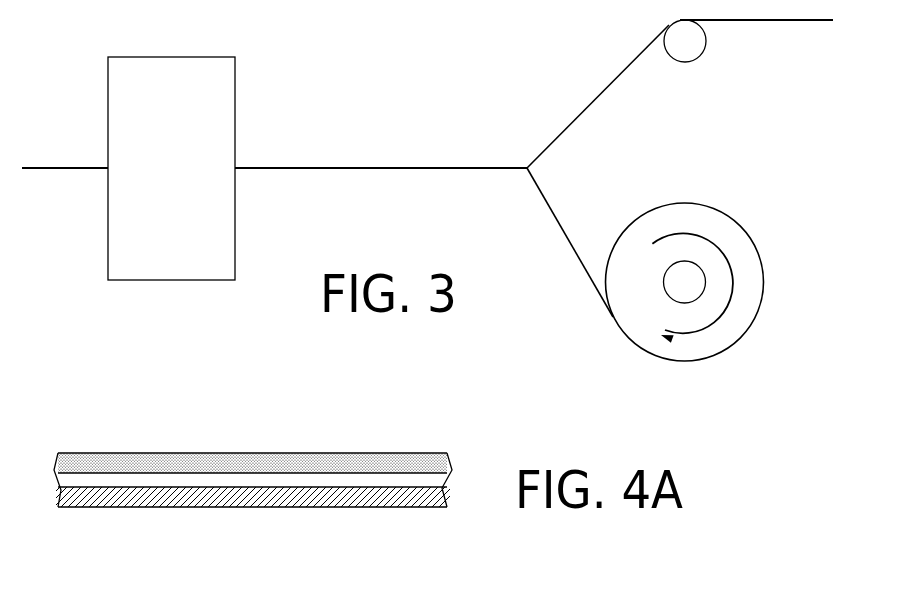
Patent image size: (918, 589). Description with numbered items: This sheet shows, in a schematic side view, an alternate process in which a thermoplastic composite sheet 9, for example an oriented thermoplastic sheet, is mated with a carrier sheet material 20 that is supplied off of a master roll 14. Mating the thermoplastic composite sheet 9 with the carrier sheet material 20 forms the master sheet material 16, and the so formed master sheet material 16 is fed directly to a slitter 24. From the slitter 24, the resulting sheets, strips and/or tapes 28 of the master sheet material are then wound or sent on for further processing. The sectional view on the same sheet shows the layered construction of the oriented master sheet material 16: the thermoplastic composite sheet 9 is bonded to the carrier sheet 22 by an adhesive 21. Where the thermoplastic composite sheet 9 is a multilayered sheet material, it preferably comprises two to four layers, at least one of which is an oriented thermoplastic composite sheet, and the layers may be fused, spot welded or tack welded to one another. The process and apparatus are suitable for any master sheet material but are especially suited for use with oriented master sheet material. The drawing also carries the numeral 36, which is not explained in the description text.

In FIG. 3, the thermoplastic composite sheet 9 is at (680, 94).
In FIG. 4A, the thermoplastic composite sheet 9 is at (400, 453).
In FIG. 3, the master roll 14 is at (734, 269).
In FIG. 3, the master sheet material 16 is at (381, 107).
In FIG. 4A, the master sheet material 16 is at (253, 414).
In FIG. 3, the carrier sheet material 20 is at (521, 242).
In FIG. 4A, the adhesive 21 is at (172, 480).
In FIG. 4A, the carrier sheet 22 is at (268, 508).
In FIG. 3, the slitter 24 is at (191, 133).
In FIG. 3, the sheets, strips and/or tapes 28 is at (56, 251).
In FIG. 4A, the adhesive layer 36 is at (400, 588).